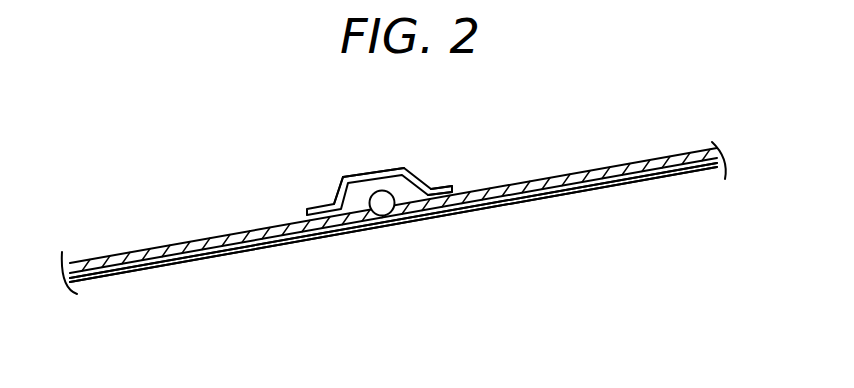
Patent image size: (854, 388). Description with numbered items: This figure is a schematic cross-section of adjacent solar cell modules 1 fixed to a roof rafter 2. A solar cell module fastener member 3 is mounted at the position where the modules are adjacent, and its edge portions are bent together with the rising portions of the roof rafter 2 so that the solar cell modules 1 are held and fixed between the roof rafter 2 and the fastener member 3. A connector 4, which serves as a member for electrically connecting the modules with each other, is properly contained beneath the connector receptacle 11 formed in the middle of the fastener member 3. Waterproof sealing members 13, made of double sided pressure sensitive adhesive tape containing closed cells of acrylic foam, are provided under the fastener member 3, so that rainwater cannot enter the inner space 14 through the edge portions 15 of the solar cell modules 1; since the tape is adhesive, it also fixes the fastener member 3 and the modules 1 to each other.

The solar cell module 1 is at (173, 253).
The roof rafter 2 is at (284, 246).
The solar cell module fastener member 3 is at (444, 189).
The connector 4 is at (412, 179).
The connector receptacle 11 is at (380, 173).
The waterproof sealing member 13 is at (447, 213).
The inner space 14 is at (352, 200).
The edge portion of the solar cell module 15 is at (387, 200).